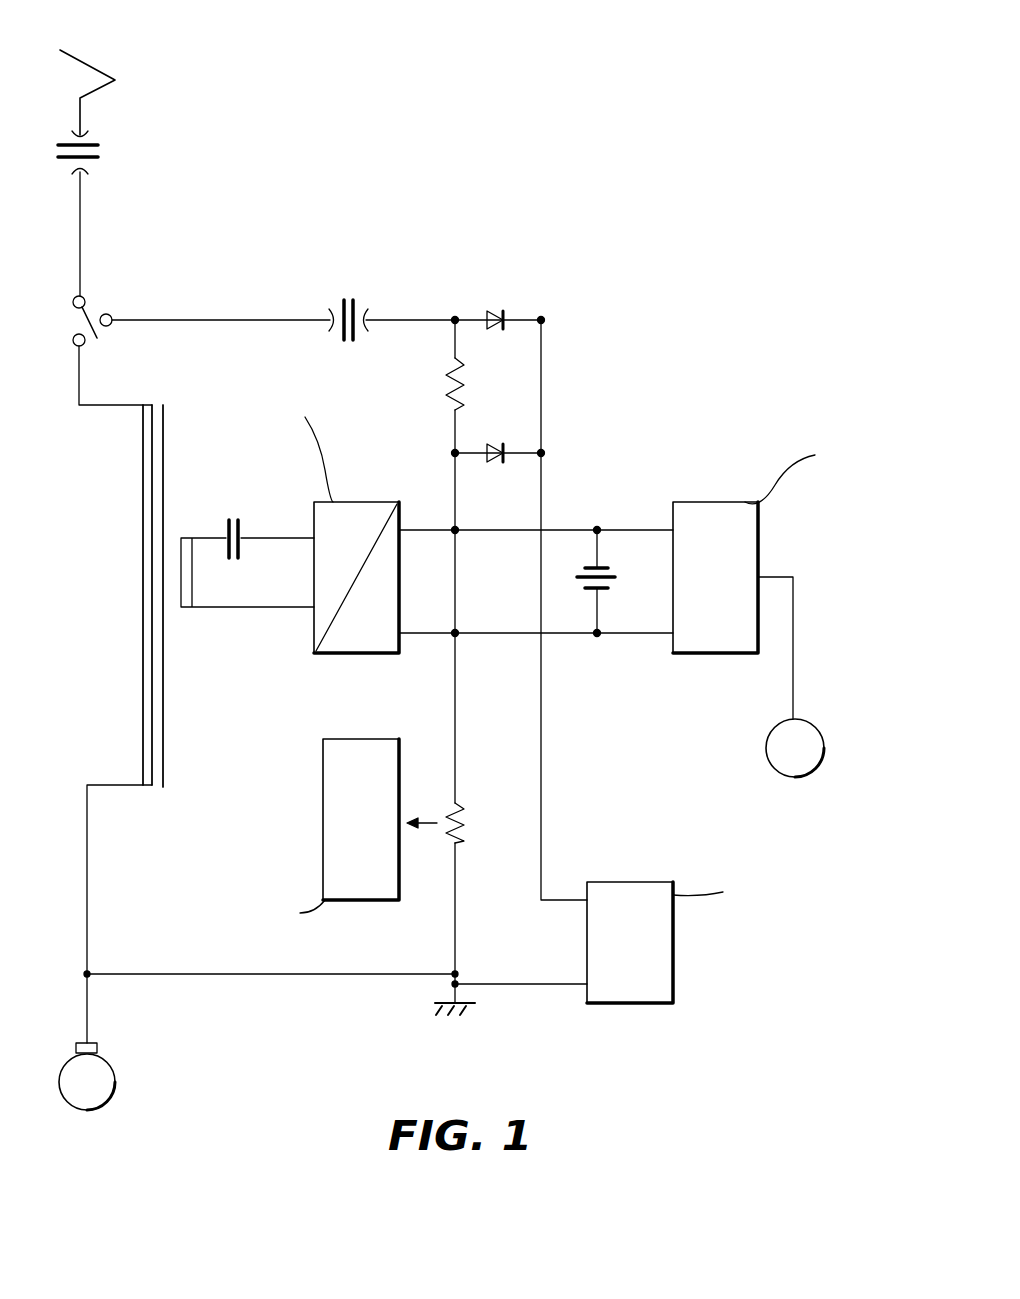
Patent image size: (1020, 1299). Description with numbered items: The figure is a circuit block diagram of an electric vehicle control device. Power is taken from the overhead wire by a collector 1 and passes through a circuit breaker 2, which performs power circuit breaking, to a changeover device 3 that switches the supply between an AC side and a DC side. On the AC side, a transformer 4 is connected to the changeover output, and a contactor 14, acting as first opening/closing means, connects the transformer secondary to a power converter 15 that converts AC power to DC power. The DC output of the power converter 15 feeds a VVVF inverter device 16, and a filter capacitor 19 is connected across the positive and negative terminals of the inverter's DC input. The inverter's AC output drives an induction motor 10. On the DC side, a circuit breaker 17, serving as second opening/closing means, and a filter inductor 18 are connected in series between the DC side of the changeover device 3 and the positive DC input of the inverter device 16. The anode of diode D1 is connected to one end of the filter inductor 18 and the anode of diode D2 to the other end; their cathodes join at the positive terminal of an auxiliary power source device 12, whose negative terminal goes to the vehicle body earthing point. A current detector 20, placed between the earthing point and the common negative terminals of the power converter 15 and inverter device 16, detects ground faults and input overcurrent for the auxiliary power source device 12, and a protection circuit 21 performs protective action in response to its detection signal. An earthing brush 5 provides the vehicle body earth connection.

The collector 1 is at (95, 65).
The circuit breaker 2 is at (100, 148).
The changeover device 3 is at (100, 302).
The transformer 4 is at (148, 790).
The earthing brush 5 is at (83, 1110).
The motor 10 is at (825, 748).
The auxiliary power source device 12 is at (627, 1005).
The contactor 14 is at (236, 520).
The power converter 15 is at (383, 502).
The VVVF inverter device 16 is at (700, 502).
The circuit breaker 17 is at (348, 298).
The filter inductor 18 is at (447, 385).
The filter capacitor 19 is at (612, 577).
The current detector 20 is at (458, 812).
The protection circuit 21 is at (369, 739).
The diode D1 is at (500, 307).
The diode D2 is at (500, 442).